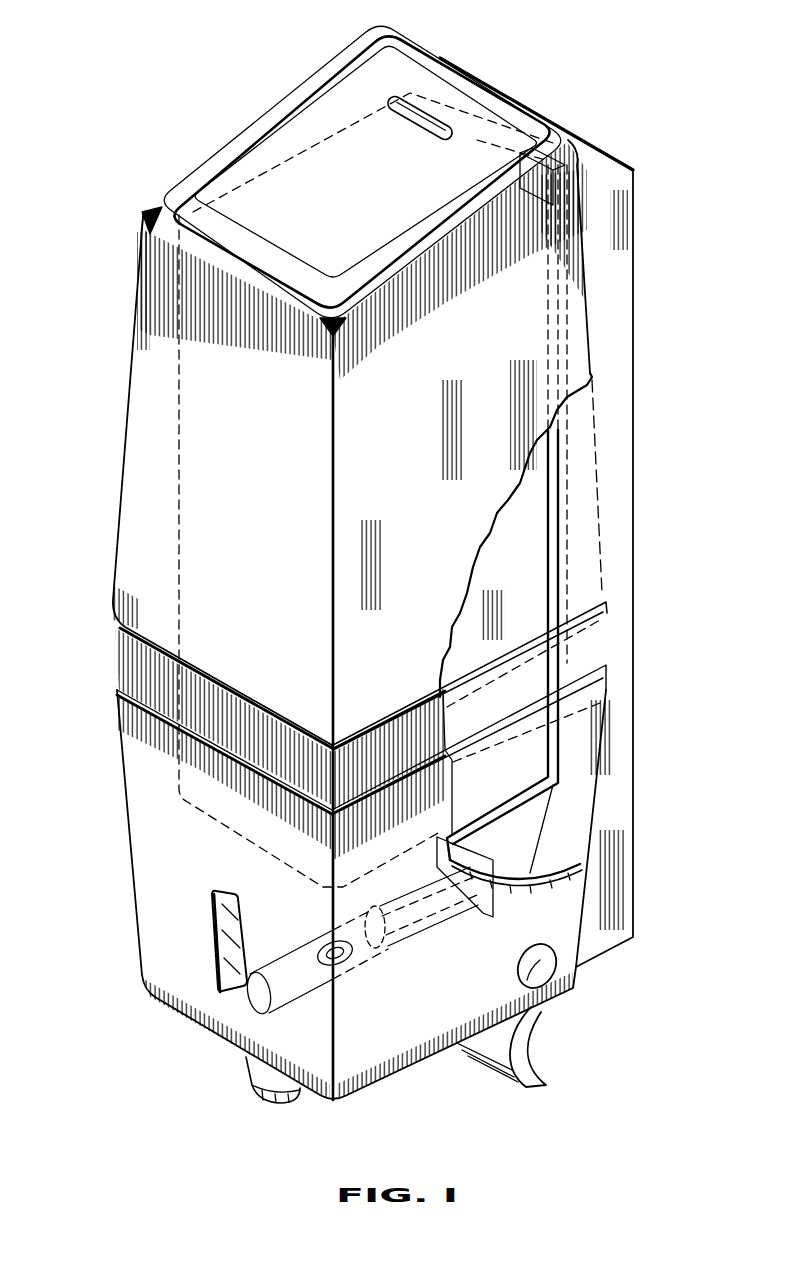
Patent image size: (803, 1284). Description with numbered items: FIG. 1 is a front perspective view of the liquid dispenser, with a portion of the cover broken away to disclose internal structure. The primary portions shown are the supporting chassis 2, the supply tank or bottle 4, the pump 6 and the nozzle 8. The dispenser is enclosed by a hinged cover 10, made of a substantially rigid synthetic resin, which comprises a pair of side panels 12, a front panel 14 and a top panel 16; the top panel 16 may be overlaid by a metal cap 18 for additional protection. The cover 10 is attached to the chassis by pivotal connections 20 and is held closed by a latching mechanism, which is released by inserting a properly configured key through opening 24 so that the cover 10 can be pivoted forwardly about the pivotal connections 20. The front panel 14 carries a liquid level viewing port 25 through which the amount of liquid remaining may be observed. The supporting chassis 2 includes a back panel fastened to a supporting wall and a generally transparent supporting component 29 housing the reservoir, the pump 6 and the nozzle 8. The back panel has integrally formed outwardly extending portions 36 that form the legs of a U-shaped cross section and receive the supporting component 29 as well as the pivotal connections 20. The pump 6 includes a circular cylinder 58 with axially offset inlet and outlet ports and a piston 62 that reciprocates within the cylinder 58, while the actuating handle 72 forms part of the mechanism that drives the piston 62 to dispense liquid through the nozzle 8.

The supporting chassis 2 is at (639, 226).
The supply tank or bottle 4 is at (517, 533).
The pump 6 is at (383, 948).
The nozzle 8 is at (250, 1084).
The hinged cover 10 is at (126, 390).
The side panel 12 is at (577, 360).
The front panel 14 is at (140, 447).
The top panel 16 is at (540, 180).
The metal cap 18 is at (398, 57).
The pivotal connections 20 is at (532, 976).
The opening 24 is at (406, 120).
The liquid level viewing port 25 is at (223, 915).
The supporting component 29 is at (510, 833).
The outwardly extending portions 36 is at (553, 853).
The circular cylinder 58 is at (287, 977).
The piston 62 is at (357, 960).
The actuating handle 72 is at (508, 1068).